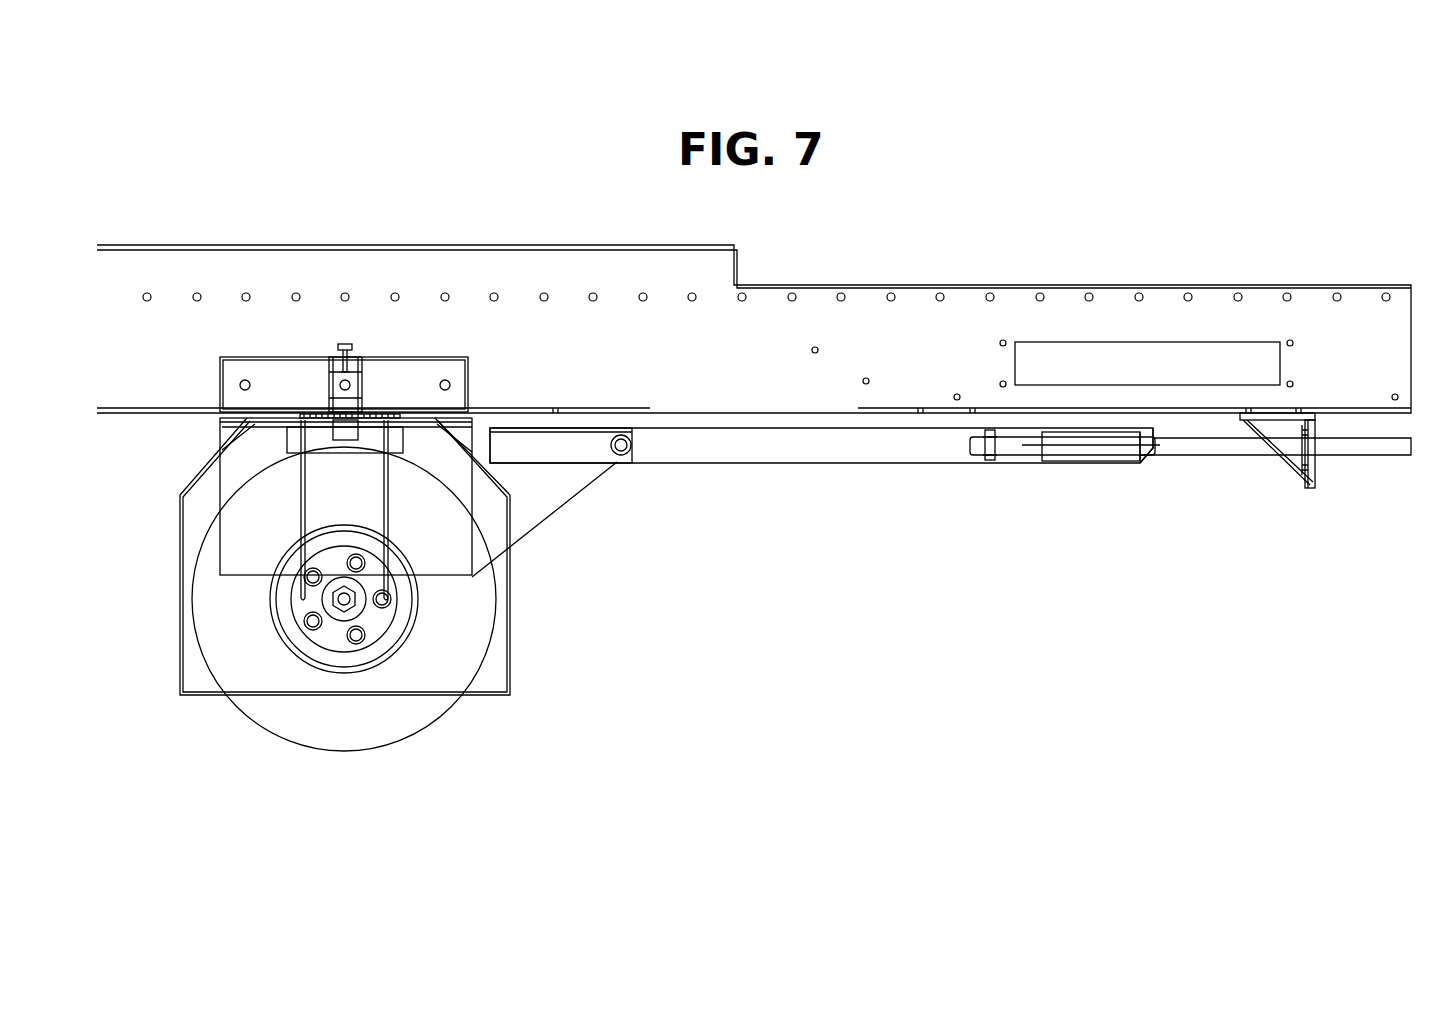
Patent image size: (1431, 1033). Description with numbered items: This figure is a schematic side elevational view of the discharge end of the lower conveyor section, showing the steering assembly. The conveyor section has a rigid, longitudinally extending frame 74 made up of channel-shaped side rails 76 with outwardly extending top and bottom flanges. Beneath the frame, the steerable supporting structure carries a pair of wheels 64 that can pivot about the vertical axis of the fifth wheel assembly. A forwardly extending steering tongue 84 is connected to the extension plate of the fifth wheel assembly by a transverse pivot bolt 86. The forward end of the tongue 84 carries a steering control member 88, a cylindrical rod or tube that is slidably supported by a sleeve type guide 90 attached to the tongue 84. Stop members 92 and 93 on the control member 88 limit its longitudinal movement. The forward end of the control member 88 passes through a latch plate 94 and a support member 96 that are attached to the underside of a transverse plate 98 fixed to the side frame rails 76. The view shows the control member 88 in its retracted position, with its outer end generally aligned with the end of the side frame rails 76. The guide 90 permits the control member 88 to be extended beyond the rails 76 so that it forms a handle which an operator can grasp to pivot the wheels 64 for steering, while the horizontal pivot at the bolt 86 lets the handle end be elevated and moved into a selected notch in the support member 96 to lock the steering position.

The frame 74 is at (478, 241).
The side rails 76 is at (808, 318).
The wheels 64 is at (405, 718).
The steering tongue 84 is at (843, 450).
The transverse pivot bolt 86 is at (622, 457).
The steering control member 88 is at (1213, 448).
The sleeve type guide 90 is at (1083, 462).
The stop member 92 is at (990, 462).
The stop member 93 is at (1153, 452).
The latch plate 94 is at (1317, 472).
The support member 96 is at (1294, 482).
The transverse plate 98 is at (1352, 408).